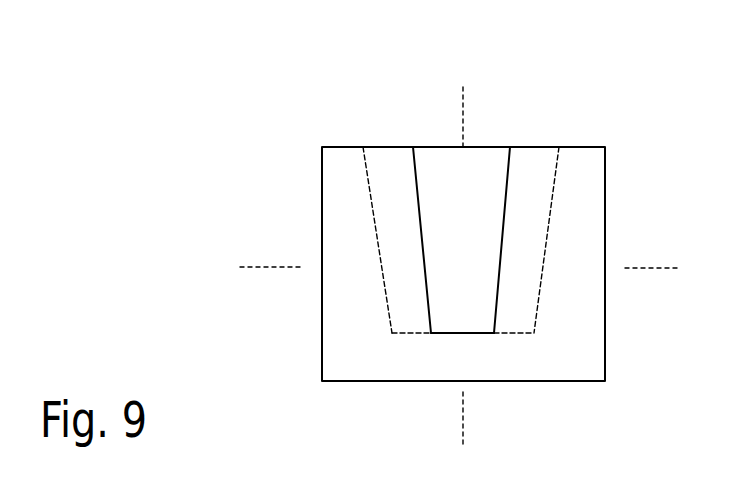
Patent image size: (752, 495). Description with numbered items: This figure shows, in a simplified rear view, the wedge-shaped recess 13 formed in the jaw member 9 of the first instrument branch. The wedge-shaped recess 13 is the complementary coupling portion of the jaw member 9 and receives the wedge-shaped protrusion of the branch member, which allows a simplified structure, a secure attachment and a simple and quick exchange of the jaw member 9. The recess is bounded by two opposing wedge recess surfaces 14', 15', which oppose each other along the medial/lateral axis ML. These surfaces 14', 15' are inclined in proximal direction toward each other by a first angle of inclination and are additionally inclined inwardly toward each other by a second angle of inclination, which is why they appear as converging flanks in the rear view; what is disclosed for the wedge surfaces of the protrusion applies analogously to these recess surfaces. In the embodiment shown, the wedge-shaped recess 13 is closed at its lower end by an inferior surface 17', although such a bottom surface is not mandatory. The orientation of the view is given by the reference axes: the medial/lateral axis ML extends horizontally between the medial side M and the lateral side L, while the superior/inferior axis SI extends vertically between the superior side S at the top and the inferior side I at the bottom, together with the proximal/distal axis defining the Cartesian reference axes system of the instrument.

The jaw member 9 is at (663, 137).
The wedge-shaped recess 13 is at (425, 122).
The wedge recess surface 14' is at (533, 196).
The wedge recess surface 15' is at (339, 240).
The inferior surface 17' is at (463, 388).
The superior side S is at (462, 100).
The superior/inferior axis SI is at (467, 125).
The inferior side I is at (463, 438).
The lateral side L is at (262, 268).
The medial side M is at (665, 268).
The medial/lateral axis ML is at (638, 268).